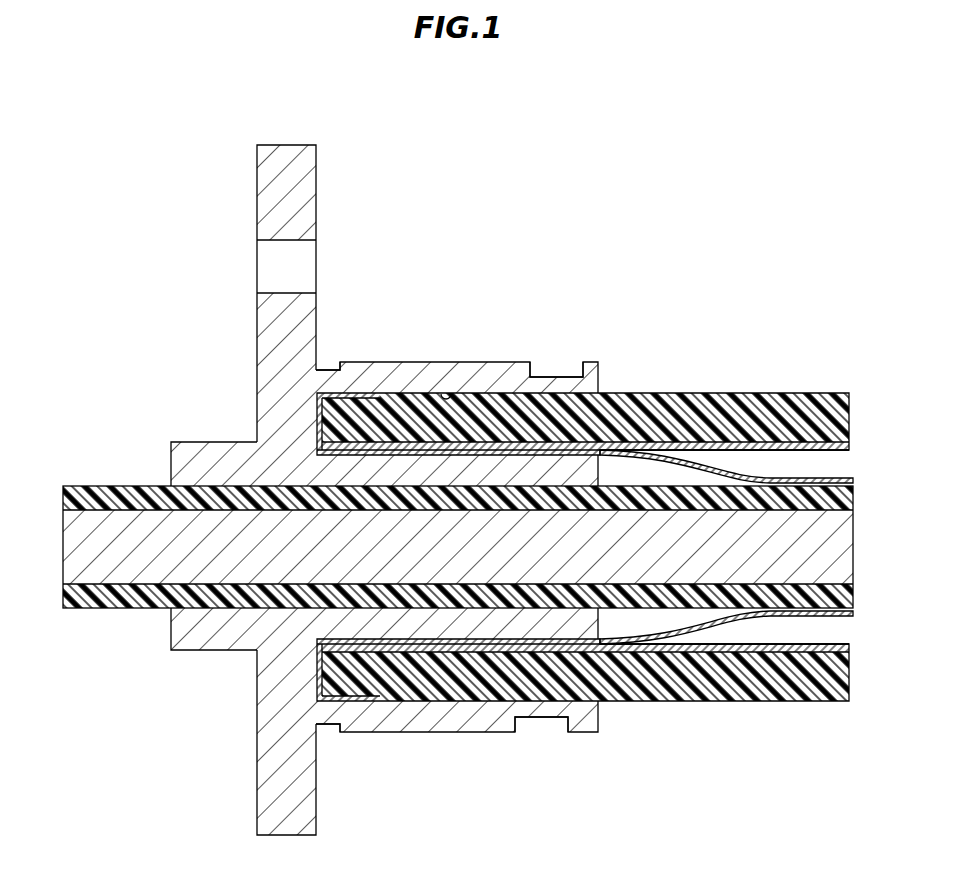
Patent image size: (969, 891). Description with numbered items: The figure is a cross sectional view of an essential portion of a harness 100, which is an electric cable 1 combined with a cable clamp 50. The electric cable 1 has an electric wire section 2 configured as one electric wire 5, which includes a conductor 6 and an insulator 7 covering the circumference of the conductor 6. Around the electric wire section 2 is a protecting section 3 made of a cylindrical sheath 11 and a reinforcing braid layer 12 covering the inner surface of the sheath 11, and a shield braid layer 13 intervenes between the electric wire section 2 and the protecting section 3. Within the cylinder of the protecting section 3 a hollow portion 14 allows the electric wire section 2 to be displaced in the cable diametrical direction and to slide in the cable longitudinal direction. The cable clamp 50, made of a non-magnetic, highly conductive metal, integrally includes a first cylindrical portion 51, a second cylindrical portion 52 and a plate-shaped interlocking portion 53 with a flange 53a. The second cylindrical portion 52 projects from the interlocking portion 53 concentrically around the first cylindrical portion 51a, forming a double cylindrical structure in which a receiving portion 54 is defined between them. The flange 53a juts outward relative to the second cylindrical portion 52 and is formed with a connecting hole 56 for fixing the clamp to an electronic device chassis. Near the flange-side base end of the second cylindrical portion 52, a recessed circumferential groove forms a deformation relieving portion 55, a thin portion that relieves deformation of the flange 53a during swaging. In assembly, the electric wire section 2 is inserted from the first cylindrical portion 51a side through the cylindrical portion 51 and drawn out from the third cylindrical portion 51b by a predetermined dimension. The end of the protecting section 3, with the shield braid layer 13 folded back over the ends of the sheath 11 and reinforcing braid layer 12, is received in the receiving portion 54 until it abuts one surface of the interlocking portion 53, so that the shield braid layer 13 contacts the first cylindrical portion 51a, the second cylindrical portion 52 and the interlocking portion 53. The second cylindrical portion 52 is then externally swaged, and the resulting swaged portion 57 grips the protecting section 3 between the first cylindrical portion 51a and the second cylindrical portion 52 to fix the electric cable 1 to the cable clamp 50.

The harness 100 is at (672, 177).
The cable clamp 50 is at (193, 740).
The electric cable 1 is at (737, 347).
The electric wire section 2 is at (460, 543).
The protecting section 3 is at (585, 595).
The electric wire 5 is at (460, 448).
The conductor 6 is at (745, 521).
The insulator 7 is at (812, 491).
The cylindrical sheath 11 is at (700, 682).
The reinforcing braid layer 12 is at (745, 650).
The shield braid layer 13 is at (790, 622).
The hollow portion 14 is at (620, 623).
The first cylindrical portion 51 is at (346, 582).
The first cylindrical portion 51a is at (425, 626).
The third cylindrical portion 51b is at (213, 452).
The second cylindrical portion 52 is at (384, 490).
The interlocking portion 53 is at (294, 490).
The flange 53a is at (318, 146).
The receiving portion 54 is at (450, 396).
The deformation relieving portion 55 is at (339, 364).
The connecting hole 56 is at (268, 272).
The swaged portion 57 is at (570, 358).